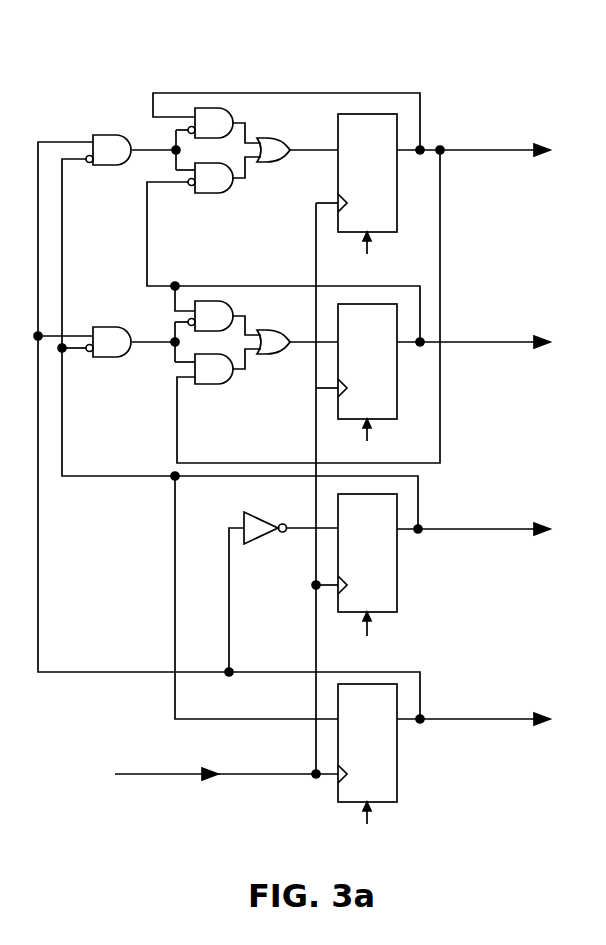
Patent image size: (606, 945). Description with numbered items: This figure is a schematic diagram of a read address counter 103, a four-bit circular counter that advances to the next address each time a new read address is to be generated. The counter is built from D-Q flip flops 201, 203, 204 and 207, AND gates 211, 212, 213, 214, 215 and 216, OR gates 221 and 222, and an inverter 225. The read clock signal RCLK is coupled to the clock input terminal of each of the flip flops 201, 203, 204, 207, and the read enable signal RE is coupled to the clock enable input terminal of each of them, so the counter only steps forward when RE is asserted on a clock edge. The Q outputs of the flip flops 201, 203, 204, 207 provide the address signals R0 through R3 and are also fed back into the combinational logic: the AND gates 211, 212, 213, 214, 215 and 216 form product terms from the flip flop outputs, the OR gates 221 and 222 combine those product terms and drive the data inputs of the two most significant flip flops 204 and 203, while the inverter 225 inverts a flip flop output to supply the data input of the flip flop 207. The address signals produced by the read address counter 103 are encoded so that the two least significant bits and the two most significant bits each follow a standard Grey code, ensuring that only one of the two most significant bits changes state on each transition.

The read address counter 103 is at (380, 52).
The D-Q flip flop 201 is at (400, 773).
The D-Q flip flop 203 is at (414, 407).
The D-Q flip flop 204 is at (414, 222).
The D-Q flip flop 207 is at (400, 586).
The AND gate 211 is at (107, 134).
The AND gate 212 is at (107, 325).
The AND gate 213 is at (233, 110).
The AND gate 214 is at (217, 194).
The AND gate 215 is at (234, 304).
The AND gate 216 is at (217, 386).
The OR gate 221 is at (277, 163).
The OR gate 222 is at (274, 355).
The inverter 225 is at (262, 546).